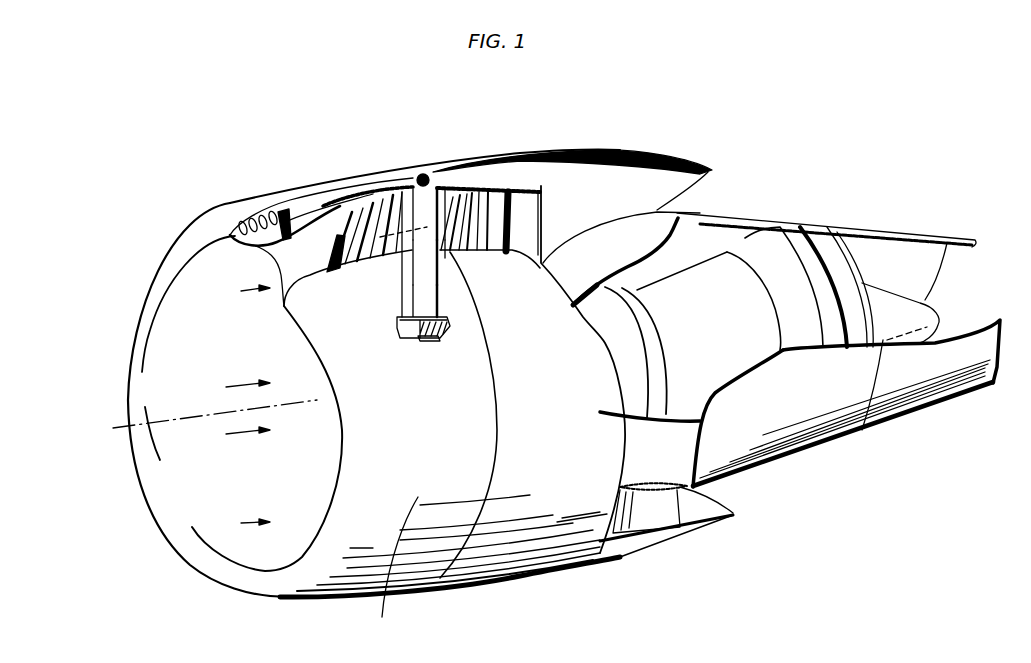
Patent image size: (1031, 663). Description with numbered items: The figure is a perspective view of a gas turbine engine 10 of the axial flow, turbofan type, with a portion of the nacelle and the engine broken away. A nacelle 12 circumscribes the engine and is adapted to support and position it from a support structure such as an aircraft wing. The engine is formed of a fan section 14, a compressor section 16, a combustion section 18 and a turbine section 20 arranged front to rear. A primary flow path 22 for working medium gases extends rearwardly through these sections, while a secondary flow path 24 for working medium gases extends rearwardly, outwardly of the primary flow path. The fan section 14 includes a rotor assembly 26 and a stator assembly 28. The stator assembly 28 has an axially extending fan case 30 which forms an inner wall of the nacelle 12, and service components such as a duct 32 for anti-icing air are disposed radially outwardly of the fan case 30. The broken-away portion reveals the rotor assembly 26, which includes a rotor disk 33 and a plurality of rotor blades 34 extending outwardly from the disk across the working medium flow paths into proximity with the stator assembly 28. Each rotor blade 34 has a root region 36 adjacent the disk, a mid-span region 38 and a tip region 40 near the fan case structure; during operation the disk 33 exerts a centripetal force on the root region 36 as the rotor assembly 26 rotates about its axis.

The gas turbine engine 10 is at (824, 214).
The nacelle 12 is at (697, 215).
The fan section 14 is at (403, 398).
The compressor section 16 is at (597, 299).
The combustion section 18 is at (670, 280).
The turbine section 20 is at (730, 255).
The primary flow path 22 is at (233, 412).
The secondary flow path 24 is at (240, 409).
The rotor assembly 26 is at (397, 329).
The stator assembly 28 is at (467, 184).
The fan case 30 is at (419, 175).
The duct 32 is at (433, 181).
The rotor disk 33 is at (427, 339).
The rotor blades 34 is at (403, 261).
The root region 36 is at (434, 317).
The mid-span region 38 is at (434, 277).
The tip region 40 is at (434, 218).